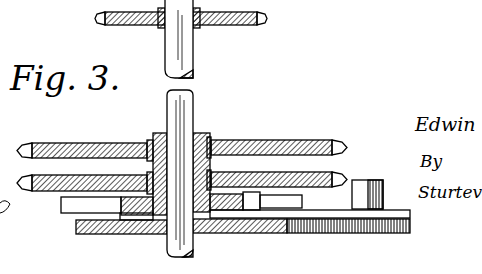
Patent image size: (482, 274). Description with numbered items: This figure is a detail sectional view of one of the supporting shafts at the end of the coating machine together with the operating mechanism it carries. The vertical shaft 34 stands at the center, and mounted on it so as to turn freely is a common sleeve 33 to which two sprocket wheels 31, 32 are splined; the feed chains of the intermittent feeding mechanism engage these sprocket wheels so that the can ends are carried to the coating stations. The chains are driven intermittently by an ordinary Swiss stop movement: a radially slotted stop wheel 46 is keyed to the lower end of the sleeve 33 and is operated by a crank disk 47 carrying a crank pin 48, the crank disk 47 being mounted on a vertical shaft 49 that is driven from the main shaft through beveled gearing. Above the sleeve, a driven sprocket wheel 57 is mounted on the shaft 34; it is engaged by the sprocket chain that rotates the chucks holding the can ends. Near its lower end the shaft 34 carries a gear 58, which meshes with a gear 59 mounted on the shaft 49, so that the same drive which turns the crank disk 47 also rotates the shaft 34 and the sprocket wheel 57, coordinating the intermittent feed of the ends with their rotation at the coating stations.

The sprocket wheel 31 is at (113, 150).
The sprocket wheel 32 is at (338, 178).
The sleeve 33 is at (200, 133).
The vertical shaft 34 is at (194, 100).
The stop wheel 46 is at (127, 213).
The crank disk 47 is at (314, 214).
The crank pin 48 is at (250, 198).
The vertical shaft 49 is at (374, 170).
The driven sprocket wheel 57 is at (246, 26).
The gear 58 is at (234, 232).
The gear 59 is at (318, 233).